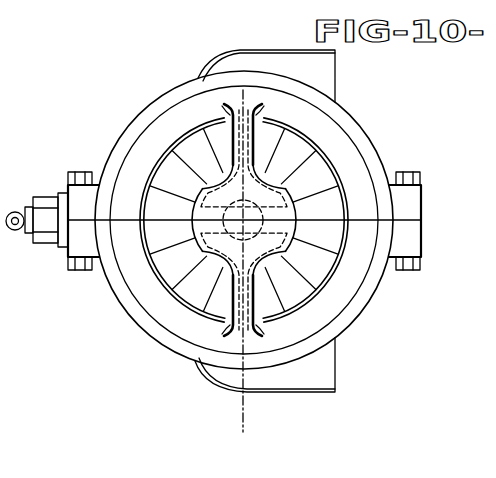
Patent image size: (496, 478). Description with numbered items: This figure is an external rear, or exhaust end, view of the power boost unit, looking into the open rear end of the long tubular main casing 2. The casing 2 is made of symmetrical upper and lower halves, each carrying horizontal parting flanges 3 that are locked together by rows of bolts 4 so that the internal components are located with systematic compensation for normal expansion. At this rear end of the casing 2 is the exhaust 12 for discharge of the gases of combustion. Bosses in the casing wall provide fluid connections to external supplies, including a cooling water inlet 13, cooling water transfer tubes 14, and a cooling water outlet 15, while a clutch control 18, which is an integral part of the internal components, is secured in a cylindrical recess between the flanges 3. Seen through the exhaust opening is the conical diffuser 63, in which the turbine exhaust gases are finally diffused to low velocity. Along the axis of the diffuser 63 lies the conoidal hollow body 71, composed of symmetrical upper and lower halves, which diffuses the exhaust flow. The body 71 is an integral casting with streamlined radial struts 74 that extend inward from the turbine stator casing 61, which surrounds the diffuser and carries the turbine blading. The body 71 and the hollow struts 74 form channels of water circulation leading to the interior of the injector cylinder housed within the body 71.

The main casing 2 is at (346, 120).
The parting flanges 3 is at (68, 186).
The bolts 4 is at (84, 171).
The exhaust 12 is at (358, 178).
The cooling water inlet 13 is at (336, 382).
The cooling water transfer tubes 14 is at (117, 127).
The cooling water outlet 15 is at (336, 69).
The clutch control 18 is at (42, 247).
The turbine stator casing 61 is at (177, 323).
The conical diffuser 63 is at (340, 308).
The conoidal hollow body 71 is at (296, 207).
The radial struts 74 is at (254, 137).